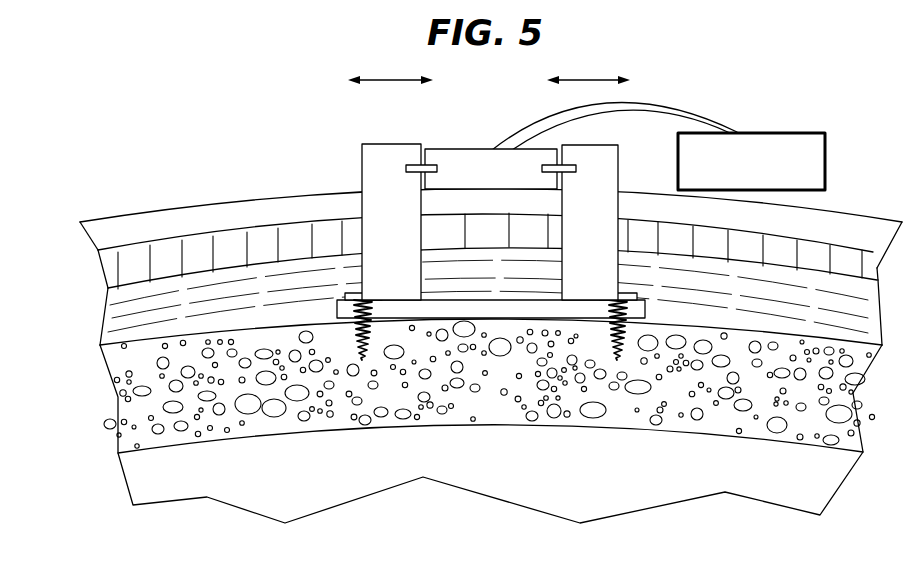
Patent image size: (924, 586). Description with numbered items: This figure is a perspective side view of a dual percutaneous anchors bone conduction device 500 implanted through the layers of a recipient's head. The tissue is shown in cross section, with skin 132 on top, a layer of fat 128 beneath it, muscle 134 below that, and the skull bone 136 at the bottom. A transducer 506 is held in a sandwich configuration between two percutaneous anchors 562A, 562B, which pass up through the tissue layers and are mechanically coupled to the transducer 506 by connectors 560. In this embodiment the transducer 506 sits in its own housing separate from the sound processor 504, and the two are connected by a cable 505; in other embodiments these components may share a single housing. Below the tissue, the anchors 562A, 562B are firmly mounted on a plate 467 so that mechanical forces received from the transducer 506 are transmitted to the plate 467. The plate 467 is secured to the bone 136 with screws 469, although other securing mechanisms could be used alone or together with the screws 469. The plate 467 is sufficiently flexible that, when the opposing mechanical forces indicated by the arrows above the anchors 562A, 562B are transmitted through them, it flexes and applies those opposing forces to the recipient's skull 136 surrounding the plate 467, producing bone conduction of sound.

The dual percutaneous anchors bone conduction device 500 is at (712, 77).
The sound processor 504 is at (827, 166).
The cable 505 is at (733, 130).
The transducer 506 is at (462, 148).
The connectors 560 is at (418, 163).
The percutaneous anchor 562A is at (362, 160).
The percutaneous anchor 562B is at (620, 165).
The plate 467 is at (462, 318).
The bone screws 469 is at (352, 343).
The skin 132 is at (84, 238).
The fat 128 is at (103, 272).
The muscle 134 is at (101, 328).
The bone 136 is at (118, 428).